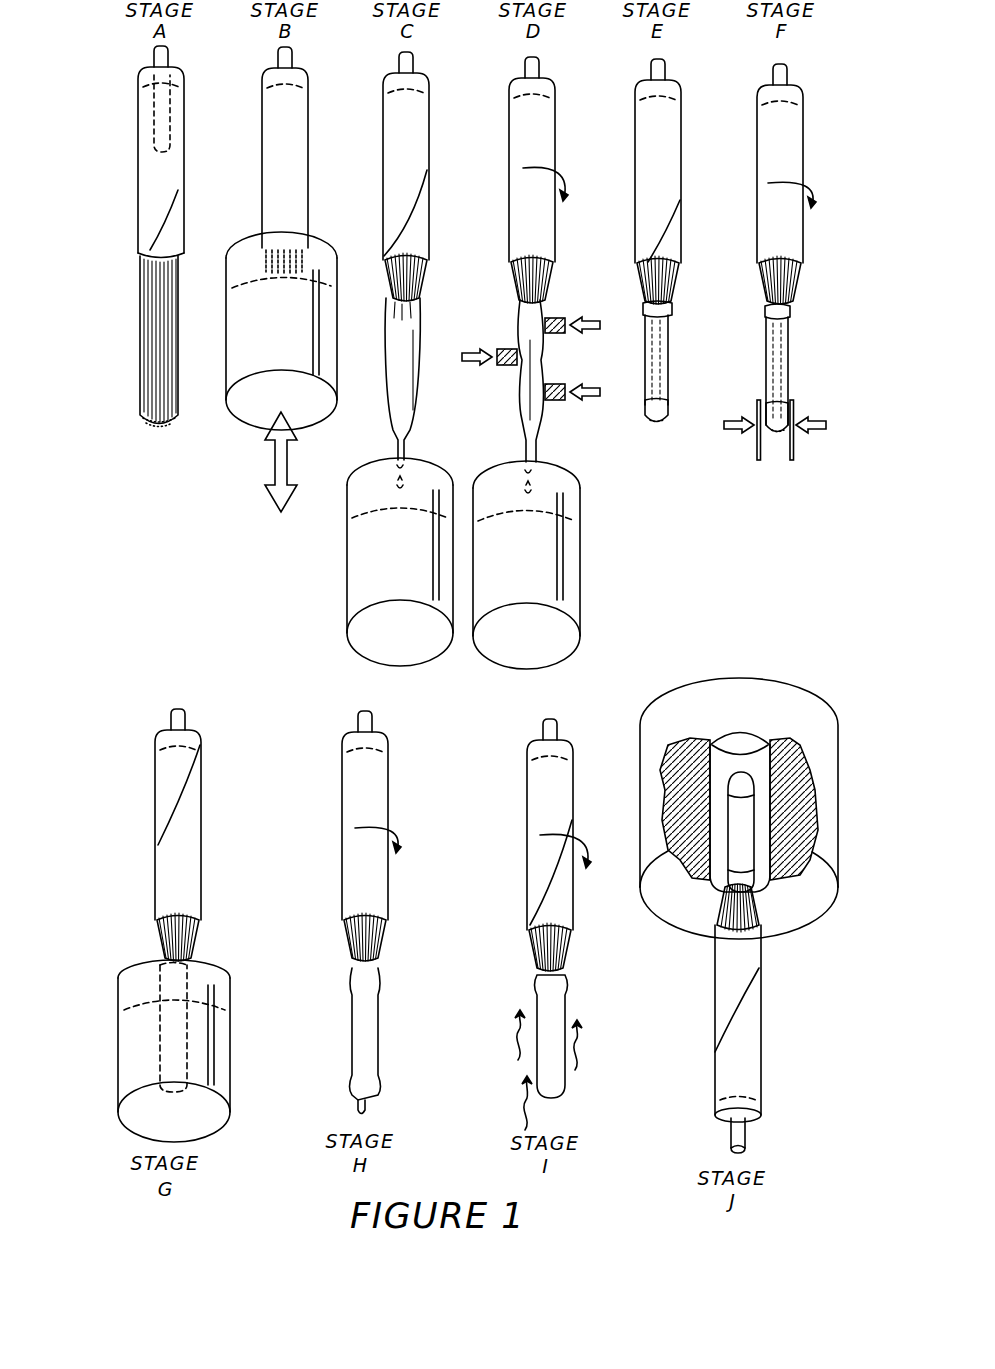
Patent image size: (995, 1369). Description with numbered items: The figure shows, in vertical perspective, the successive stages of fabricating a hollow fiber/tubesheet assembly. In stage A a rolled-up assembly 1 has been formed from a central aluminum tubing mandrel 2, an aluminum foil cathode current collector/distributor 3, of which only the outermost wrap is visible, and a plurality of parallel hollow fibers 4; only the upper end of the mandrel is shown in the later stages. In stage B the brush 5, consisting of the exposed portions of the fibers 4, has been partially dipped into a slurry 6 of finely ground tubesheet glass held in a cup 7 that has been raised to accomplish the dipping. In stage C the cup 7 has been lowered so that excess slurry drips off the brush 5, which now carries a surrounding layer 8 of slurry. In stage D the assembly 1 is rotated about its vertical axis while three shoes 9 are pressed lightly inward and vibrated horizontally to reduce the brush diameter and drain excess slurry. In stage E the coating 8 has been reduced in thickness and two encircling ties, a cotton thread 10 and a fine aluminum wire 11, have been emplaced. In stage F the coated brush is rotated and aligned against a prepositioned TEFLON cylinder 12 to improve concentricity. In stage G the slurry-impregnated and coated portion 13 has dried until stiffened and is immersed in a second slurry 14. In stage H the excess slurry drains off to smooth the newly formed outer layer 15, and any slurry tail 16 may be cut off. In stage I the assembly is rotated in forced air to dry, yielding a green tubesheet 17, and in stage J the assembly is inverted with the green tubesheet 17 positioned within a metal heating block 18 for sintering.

The rolled-up assembly 1 is at (459, 585).
The aluminum tubing mandrel 2 is at (170, 58).
The aluminum foil cathode current collector/distributor 3 is at (168, 193).
The parallel hollow fibers 4 is at (162, 357).
The brush 5 is at (132, 312).
The slurry 6 is at (250, 353).
The cup 7 is at (230, 274).
The surrounding layer of slurry 8 is at (403, 396).
The shoes 9 is at (512, 348).
The cotton thread tie 10 is at (672, 310).
The fine aluminum wire tie 11 is at (672, 410).
The TEFLON cylinder 12 is at (757, 450).
The slurry-impregnated and -coated portion 13 is at (226, 1050).
The slurry 14 is at (140, 1054).
The outer layer 15 is at (365, 1032).
The slurry tail 16 is at (366, 1110).
The green tubesheet 17 is at (582, 1007).
The metal heating block 18 is at (682, 712).